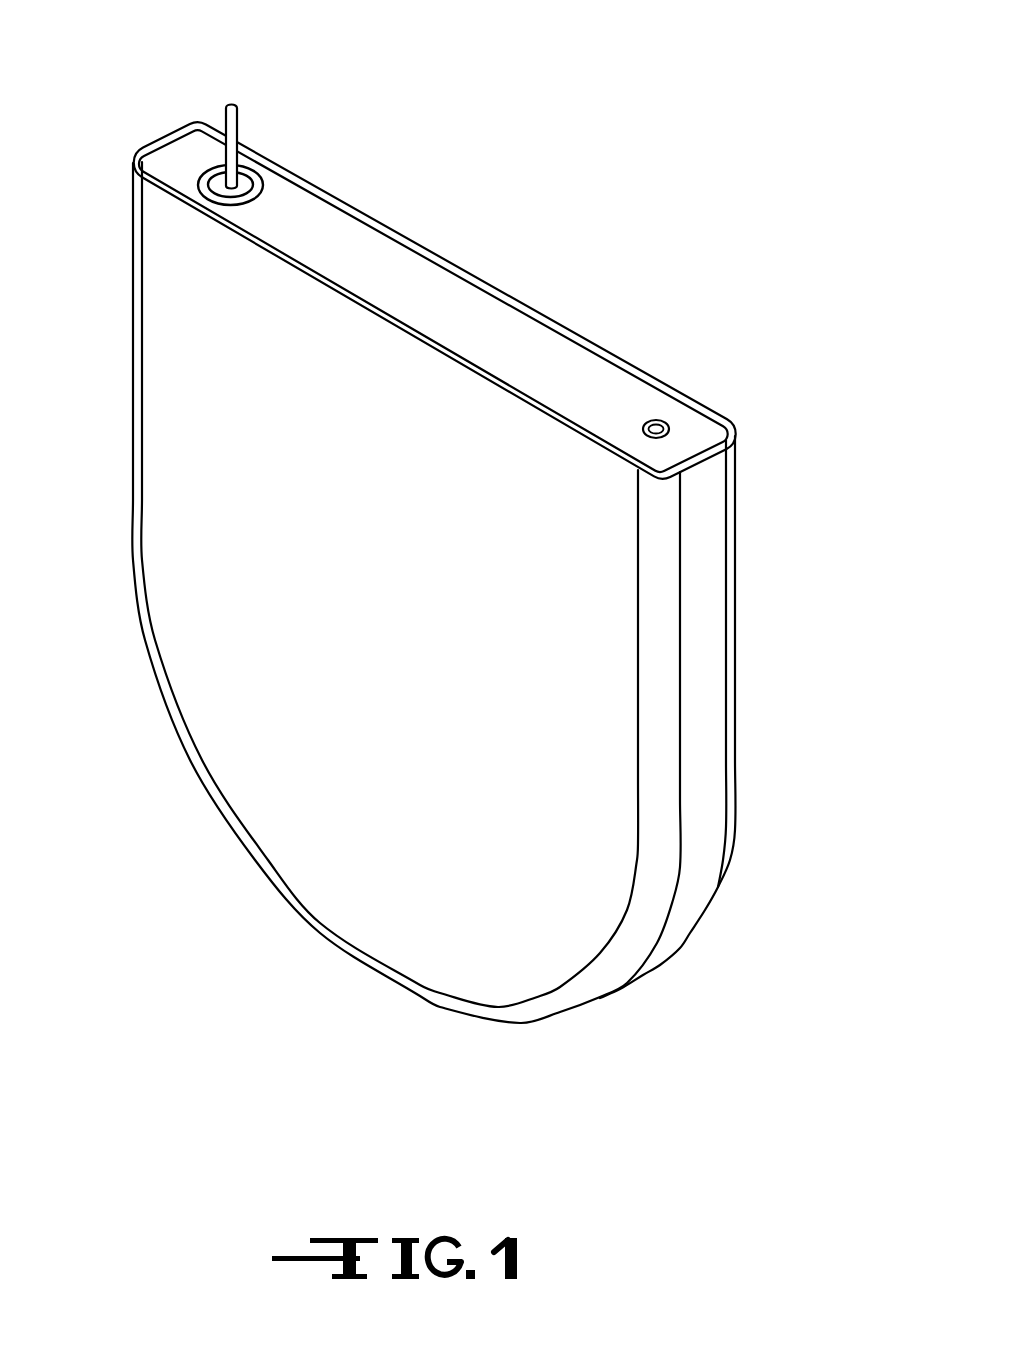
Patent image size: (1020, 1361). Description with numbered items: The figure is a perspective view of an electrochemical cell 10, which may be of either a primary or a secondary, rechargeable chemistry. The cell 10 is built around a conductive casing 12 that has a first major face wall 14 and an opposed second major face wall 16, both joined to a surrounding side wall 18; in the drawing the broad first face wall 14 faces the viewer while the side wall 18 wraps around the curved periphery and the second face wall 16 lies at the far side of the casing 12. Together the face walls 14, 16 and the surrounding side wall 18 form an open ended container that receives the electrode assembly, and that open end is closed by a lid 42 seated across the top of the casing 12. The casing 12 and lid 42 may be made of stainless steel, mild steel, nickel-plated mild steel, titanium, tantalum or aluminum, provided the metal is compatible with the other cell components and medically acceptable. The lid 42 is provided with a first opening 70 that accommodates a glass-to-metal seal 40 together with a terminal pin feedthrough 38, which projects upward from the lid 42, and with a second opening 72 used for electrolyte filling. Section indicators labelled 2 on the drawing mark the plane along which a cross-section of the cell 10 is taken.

The electrochemical cell 10 is at (457, 523).
The conductive casing 12 is at (484, 592).
The first major face wall 14 is at (425, 733).
The second major face wall 16 is at (736, 762).
The surrounding side wall 18 is at (697, 822).
The terminal pin feedthrough 38 is at (232, 105).
The glass-to-metal seal 40 is at (213, 180).
The lid 42 is at (507, 327).
The first opening 70 is at (250, 172).
The second opening 72 is at (663, 427).
The section line 2- 2 is at (290, 120).